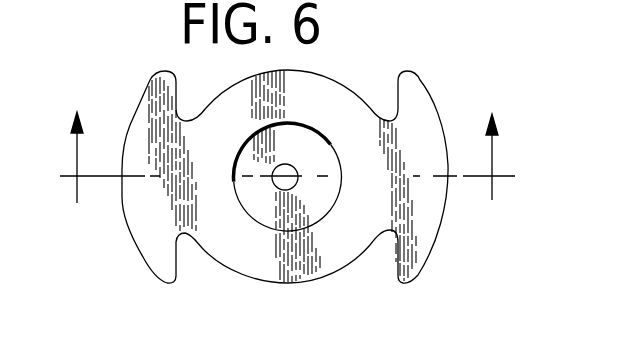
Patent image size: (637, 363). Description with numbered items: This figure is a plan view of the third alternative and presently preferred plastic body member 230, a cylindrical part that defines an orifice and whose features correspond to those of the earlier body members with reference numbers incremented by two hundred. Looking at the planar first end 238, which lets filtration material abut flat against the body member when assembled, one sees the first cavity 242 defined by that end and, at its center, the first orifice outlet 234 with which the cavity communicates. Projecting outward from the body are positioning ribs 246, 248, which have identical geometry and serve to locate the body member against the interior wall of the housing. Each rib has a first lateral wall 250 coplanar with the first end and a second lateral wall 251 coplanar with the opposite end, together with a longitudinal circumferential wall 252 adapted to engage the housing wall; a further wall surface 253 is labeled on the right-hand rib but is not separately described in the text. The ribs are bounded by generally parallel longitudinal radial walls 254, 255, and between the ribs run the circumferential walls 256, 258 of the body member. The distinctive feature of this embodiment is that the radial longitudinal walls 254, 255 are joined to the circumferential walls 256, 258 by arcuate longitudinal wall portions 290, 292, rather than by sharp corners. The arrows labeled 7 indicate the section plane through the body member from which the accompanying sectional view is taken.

The body member 230 is at (473, 110).
The first orifice outlet 234 is at (285, 180).
The first end 238 is at (228, 154).
The first cavity 242 is at (338, 208).
The positioning rib 246 is at (133, 118).
The positioning rib 248 is at (432, 94).
The first lateral wall 250 is at (153, 217).
The second lateral wall 251 is at (418, 222).
The longitudinal circumferential wall 252 is at (122, 196).
The right lobe lower edge 253 is at (427, 257).
The longitudinal radial wall 254 is at (177, 82).
The longitudinal radial wall 255 is at (176, 262).
The circumferential wall 256 is at (305, 72).
The circumferential wall 258 is at (263, 284).
The arcuate longitudinal wall portion 290 is at (187, 119).
The arcuate longitudinal wall portion 292 is at (185, 234).
The section line 7- 7 is at (283, 159).